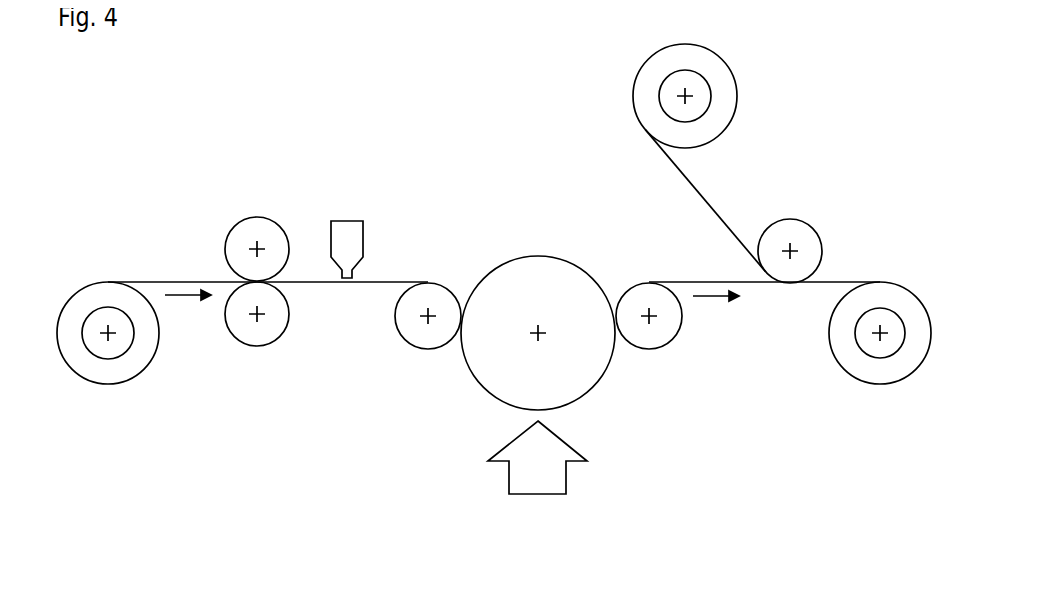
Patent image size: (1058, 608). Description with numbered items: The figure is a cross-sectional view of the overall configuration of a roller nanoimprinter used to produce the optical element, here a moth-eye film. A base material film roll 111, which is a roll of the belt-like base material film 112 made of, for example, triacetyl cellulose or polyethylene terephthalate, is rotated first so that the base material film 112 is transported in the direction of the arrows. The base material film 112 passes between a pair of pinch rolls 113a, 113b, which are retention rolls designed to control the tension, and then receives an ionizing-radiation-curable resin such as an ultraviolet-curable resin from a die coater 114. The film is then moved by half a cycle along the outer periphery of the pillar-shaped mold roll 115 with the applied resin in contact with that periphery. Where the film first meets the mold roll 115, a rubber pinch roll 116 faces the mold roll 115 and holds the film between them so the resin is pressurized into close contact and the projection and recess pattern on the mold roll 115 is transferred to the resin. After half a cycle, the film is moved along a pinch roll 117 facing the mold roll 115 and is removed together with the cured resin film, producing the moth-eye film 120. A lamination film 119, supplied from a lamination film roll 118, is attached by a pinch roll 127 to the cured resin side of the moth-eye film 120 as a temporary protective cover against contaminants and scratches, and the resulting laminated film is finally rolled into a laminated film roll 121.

The base material film roll 111 is at (107, 370).
The base material film 112 is at (167, 282).
The pinch roll 113a is at (253, 222).
The pinch roll 113b is at (255, 345).
The die coater 114 is at (345, 232).
The mold roll 115 is at (537, 268).
The pinch roll 116 is at (430, 340).
The pinch roll 117 is at (650, 340).
The lamination film roll 118 is at (723, 93).
The lamination film 119 is at (698, 183).
The moth-eye film 120 is at (702, 283).
The laminated film roll 121 is at (882, 373).
The pinch roll 127 is at (815, 238).